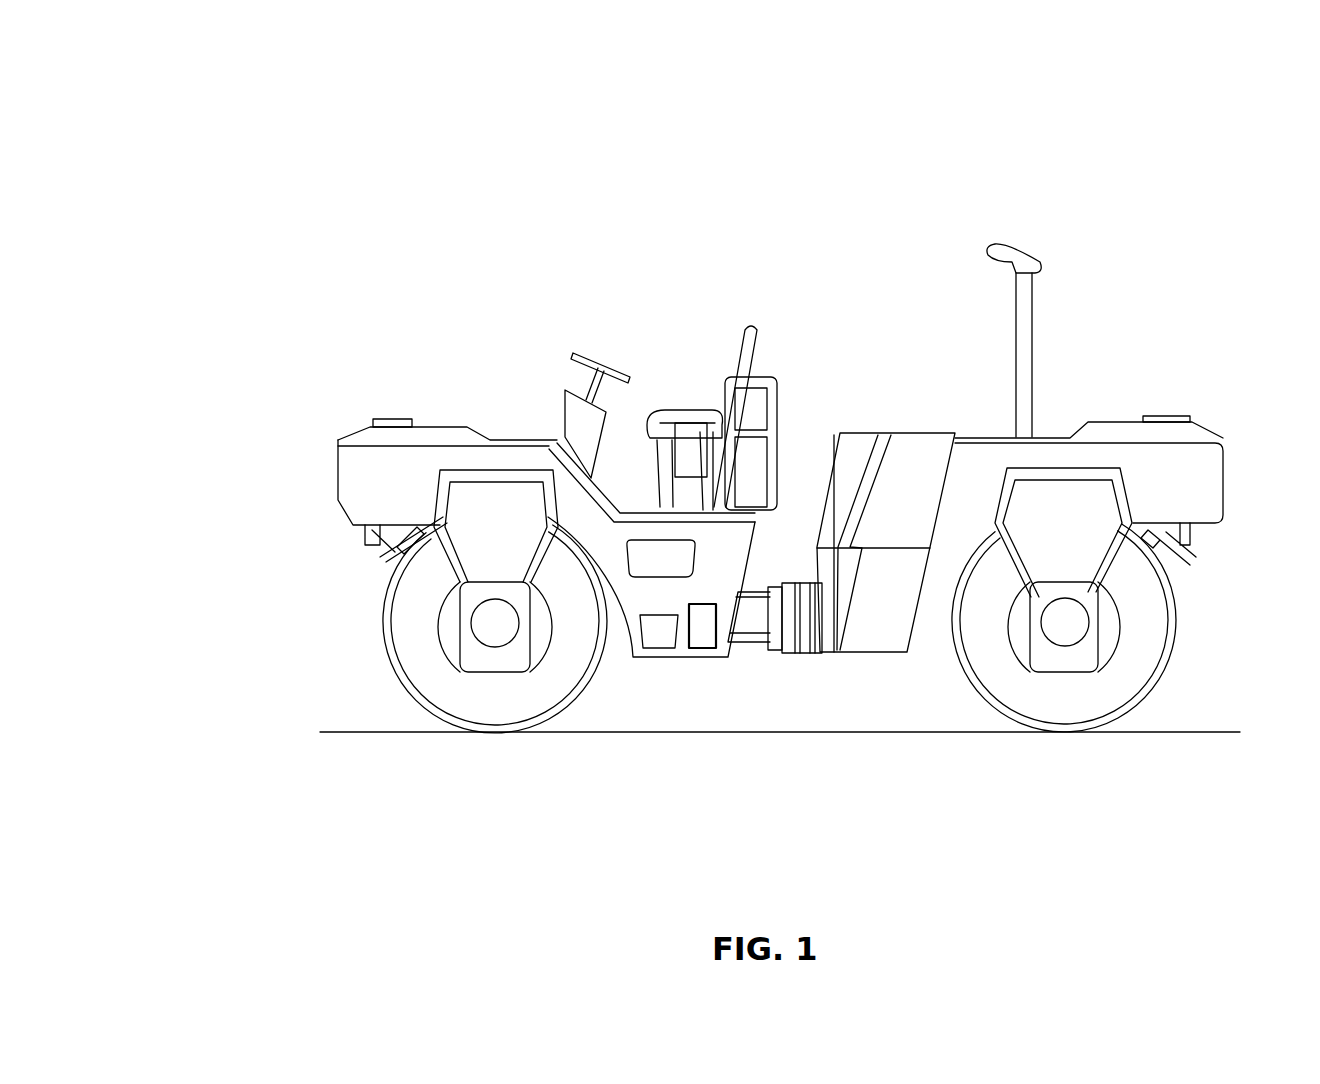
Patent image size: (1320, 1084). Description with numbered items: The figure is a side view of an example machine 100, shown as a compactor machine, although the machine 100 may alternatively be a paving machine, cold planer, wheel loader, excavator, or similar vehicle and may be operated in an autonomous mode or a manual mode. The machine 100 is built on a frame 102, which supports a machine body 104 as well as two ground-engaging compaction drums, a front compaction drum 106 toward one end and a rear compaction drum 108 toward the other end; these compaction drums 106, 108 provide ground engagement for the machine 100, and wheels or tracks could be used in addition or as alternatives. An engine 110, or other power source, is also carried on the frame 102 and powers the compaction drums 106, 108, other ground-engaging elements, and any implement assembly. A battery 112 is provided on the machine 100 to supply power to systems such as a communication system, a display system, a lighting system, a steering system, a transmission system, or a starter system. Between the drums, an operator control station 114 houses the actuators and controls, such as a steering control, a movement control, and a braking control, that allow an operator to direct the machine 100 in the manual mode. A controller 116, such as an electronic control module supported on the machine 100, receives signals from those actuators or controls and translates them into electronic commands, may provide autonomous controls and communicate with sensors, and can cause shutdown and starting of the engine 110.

The machine 100 is at (278, 70).
The frame 102 is at (473, 493).
The machine body 104 is at (362, 458).
The front compaction drum 106 is at (405, 630).
The rear compaction drum 108 is at (992, 673).
The engine 110 is at (913, 467).
The battery 112 is at (862, 630).
The operator control station 114 is at (652, 375).
The controller 116 is at (700, 645).